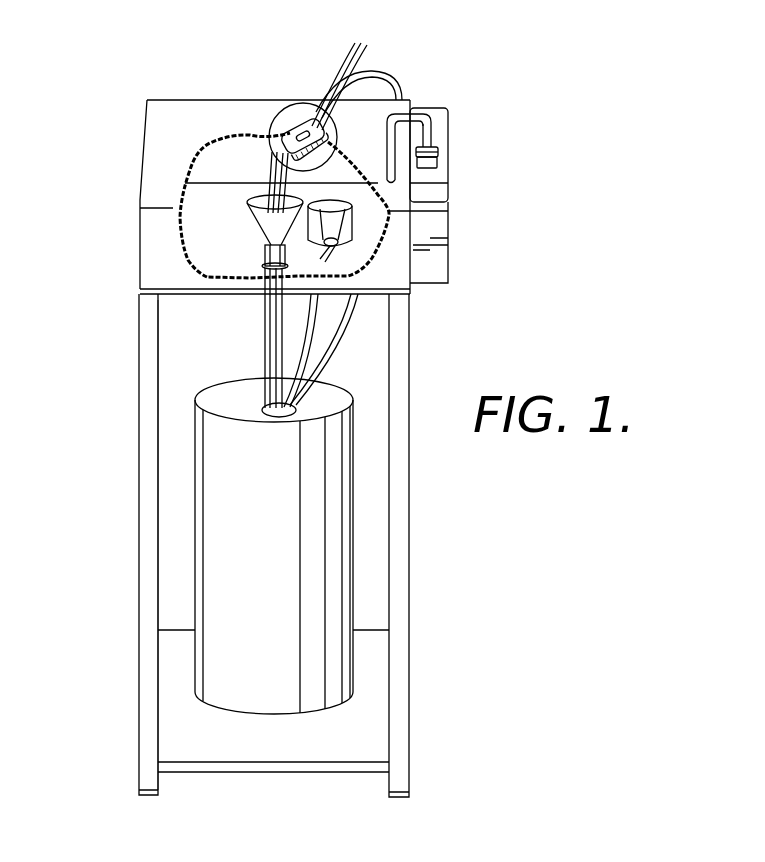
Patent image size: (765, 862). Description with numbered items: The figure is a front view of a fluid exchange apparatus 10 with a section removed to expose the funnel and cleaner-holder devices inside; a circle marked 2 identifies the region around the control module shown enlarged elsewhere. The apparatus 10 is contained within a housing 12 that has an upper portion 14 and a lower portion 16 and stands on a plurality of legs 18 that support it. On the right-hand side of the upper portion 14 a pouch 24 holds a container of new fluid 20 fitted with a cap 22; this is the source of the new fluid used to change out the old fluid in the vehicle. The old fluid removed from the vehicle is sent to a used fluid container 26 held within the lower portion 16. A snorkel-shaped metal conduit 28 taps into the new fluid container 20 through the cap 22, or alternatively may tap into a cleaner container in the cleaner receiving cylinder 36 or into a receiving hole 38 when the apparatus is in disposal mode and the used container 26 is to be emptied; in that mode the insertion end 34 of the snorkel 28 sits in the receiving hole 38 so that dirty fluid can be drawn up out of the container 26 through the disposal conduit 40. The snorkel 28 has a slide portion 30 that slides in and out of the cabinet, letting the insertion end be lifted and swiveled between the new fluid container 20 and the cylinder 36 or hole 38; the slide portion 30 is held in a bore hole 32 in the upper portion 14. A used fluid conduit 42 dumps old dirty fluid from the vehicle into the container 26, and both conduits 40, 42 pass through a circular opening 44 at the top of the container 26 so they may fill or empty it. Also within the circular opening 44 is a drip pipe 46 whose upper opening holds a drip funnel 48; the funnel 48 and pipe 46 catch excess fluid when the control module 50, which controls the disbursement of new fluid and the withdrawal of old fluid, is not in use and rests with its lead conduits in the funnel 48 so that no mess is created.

The detail view circle (FIG. 2) 2 is at (287, 108).
The fluid exchange apparatus 10 is at (102, 226).
The housing 12 is at (133, 368).
The upper portion 14 is at (139, 272).
The lower portion 16 is at (138, 550).
The legs 18 is at (139, 788).
The container of new fluid 20 is at (456, 136).
The cap 22 is at (439, 146).
The pouch 24 is at (444, 283).
The used fluid container 26 is at (269, 520).
The snorkel-shaped metal conduit 28 is at (407, 113).
The slide portion 30 is at (387, 177).
The bore hole 32 is at (433, 184).
The insertion end 34 is at (426, 112).
The cleaner receiving cylinder 36 is at (367, 230).
The receiving hole 38 is at (334, 241).
The disposal conduit 40 is at (308, 340).
The used fluid conduit 42 is at (352, 304).
The circular opening 44 is at (264, 409).
The drip pipe 46 is at (266, 321).
The drip funnel 48 is at (262, 231).
The control module 50 is at (300, 112).